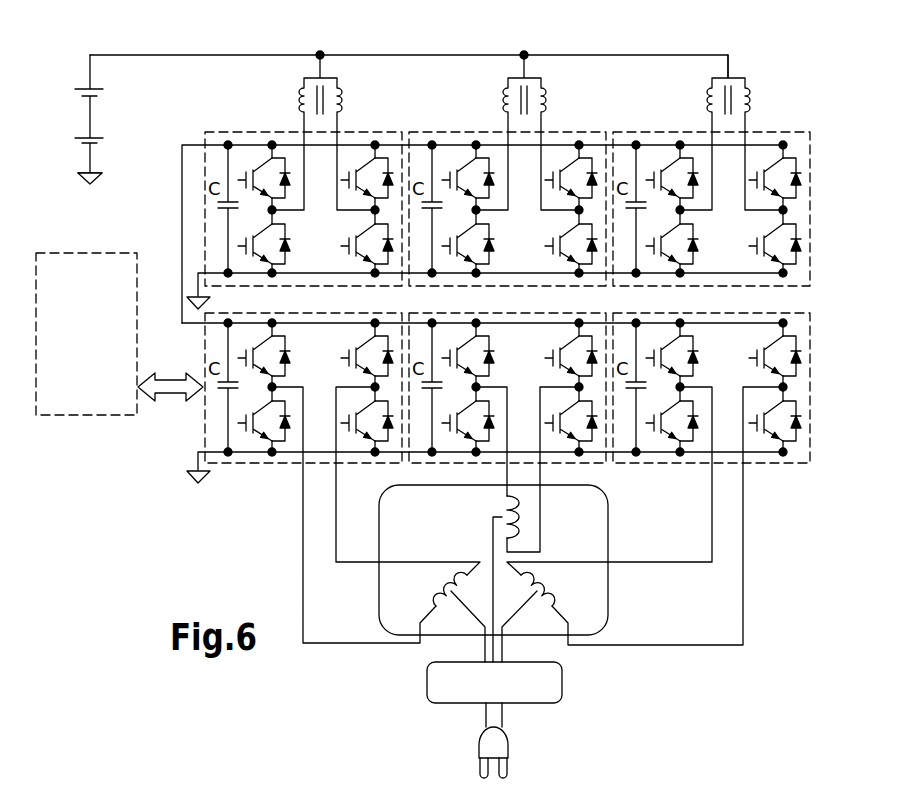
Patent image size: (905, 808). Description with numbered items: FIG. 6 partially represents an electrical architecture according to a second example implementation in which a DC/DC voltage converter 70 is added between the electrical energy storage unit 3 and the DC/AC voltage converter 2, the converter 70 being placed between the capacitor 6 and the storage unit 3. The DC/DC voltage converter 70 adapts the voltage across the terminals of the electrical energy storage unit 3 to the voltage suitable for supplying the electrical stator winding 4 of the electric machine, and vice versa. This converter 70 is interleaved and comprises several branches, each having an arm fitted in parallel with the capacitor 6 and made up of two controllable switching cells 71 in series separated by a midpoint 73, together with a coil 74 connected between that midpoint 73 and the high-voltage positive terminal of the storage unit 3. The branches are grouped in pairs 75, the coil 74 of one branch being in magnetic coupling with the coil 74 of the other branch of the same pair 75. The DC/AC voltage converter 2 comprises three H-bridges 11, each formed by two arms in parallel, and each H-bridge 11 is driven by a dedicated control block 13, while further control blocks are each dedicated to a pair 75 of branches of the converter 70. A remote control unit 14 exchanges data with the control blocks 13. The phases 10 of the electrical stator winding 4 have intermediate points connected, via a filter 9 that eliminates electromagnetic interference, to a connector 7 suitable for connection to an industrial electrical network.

The electrical energy storage unit 3 is at (82, 87).
The coil 74 is at (292, 100).
The pair of branches 75 is at (220, 132).
The midpoint 73 is at (272, 210).
The switching cell 71 is at (290, 248).
The DC/DC voltage converter 70 is at (494, 184).
The control block 13 is at (117, 337).
The remote control unit 14 is at (145, 357).
The DC/AC voltage converter 2 is at (494, 422).
The capacitor 6 is at (228, 425).
The H-bridge 11 is at (267, 465).
The electrical stator winding 4 is at (589, 585).
The phase 10 is at (408, 582).
The filter 9 is at (437, 683).
The connector 7 is at (488, 740).